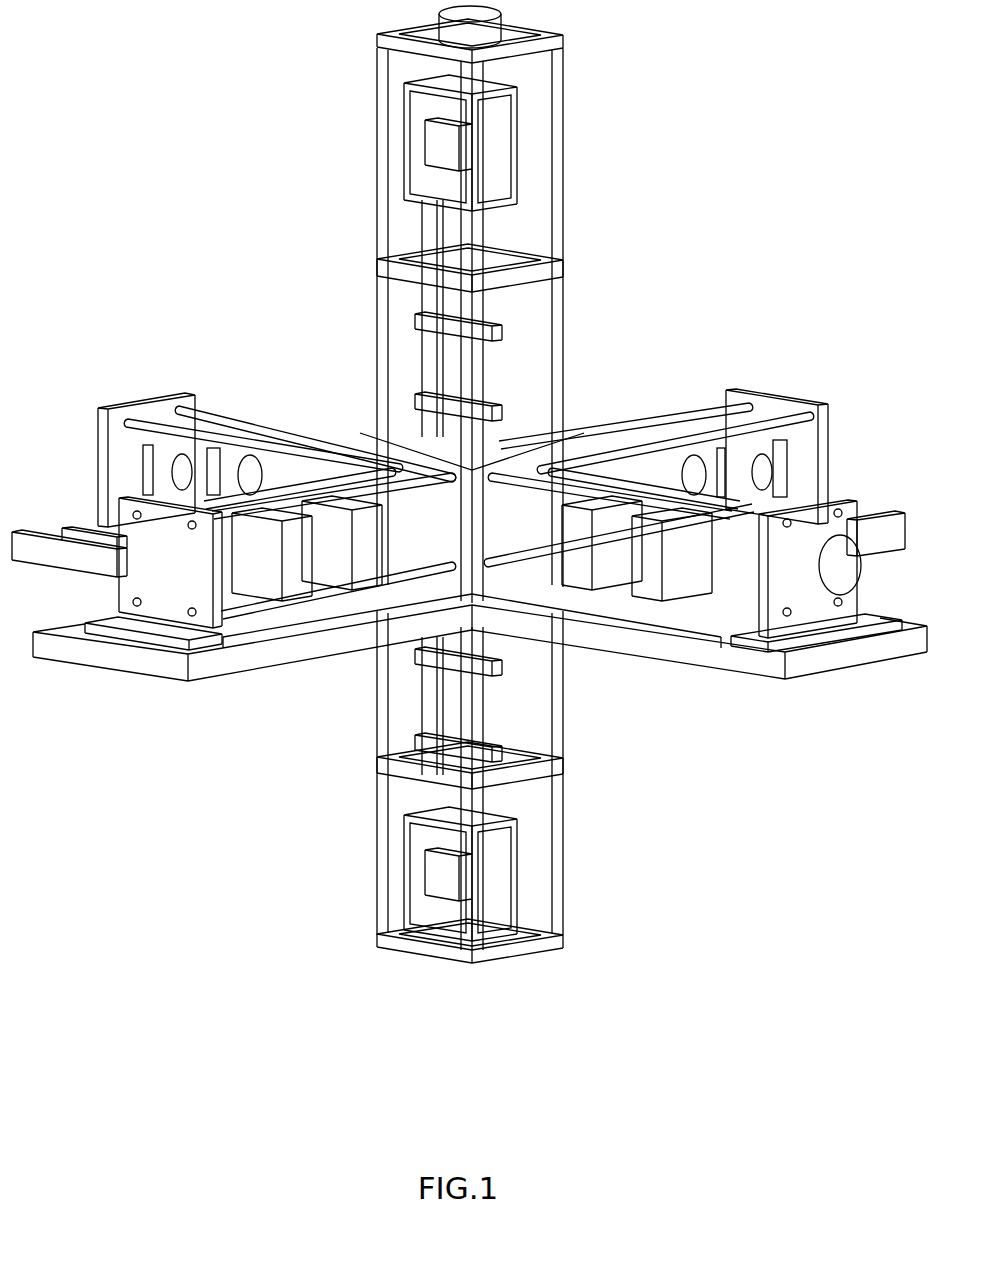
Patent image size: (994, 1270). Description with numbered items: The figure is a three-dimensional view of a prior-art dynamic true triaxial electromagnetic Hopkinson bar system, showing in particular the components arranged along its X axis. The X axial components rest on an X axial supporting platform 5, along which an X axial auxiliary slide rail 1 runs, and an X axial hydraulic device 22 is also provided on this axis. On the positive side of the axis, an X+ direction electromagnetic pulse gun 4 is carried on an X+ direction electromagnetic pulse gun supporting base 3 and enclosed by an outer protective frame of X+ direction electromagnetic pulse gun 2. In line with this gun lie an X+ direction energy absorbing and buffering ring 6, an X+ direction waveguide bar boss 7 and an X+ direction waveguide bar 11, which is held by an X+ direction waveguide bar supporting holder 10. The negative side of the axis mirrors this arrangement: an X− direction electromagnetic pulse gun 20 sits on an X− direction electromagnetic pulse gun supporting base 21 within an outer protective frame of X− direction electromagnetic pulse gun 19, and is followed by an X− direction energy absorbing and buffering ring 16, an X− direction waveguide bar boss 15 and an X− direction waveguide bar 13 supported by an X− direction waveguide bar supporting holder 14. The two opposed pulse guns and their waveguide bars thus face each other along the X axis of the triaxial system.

The X axial auxiliary slide rail 1 is at (848, 655).
The outer protective frame of X+ direction electromagnetic pulse gun 2 is at (137, 447).
The X+ direction electromagnetic pulse gun supporting base 3 is at (173, 447).
The X+ direction electromagnetic pulse gun 4 is at (200, 503).
The X axial supporting platform 5 is at (38, 548).
The X+ direction energy absorbing and buffering ring 6 is at (233, 503).
The X+ direction waveguide bar boss 7 is at (263, 503).
The X+ direction waveguide bar supporting holder 10 is at (305, 503).
The X+ direction waveguide bar 11 is at (345, 503).
The X− direction waveguide bar 13 is at (577, 527).
The X− direction waveguide bar supporting holder 14 is at (622, 513).
The X− direction waveguide bar boss 15 is at (662, 527).
The X− direction energy absorbing and buffering ring 16 is at (672, 458).
The outer protective frame of X− direction electromagnetic pulse gun 19 is at (752, 590).
The X− direction electromagnetic pulse gun 20 is at (717, 595).
The X− direction electromagnetic pulse gun supporting base 21 is at (745, 590).
The X axial hydraulic device 22 is at (848, 640).